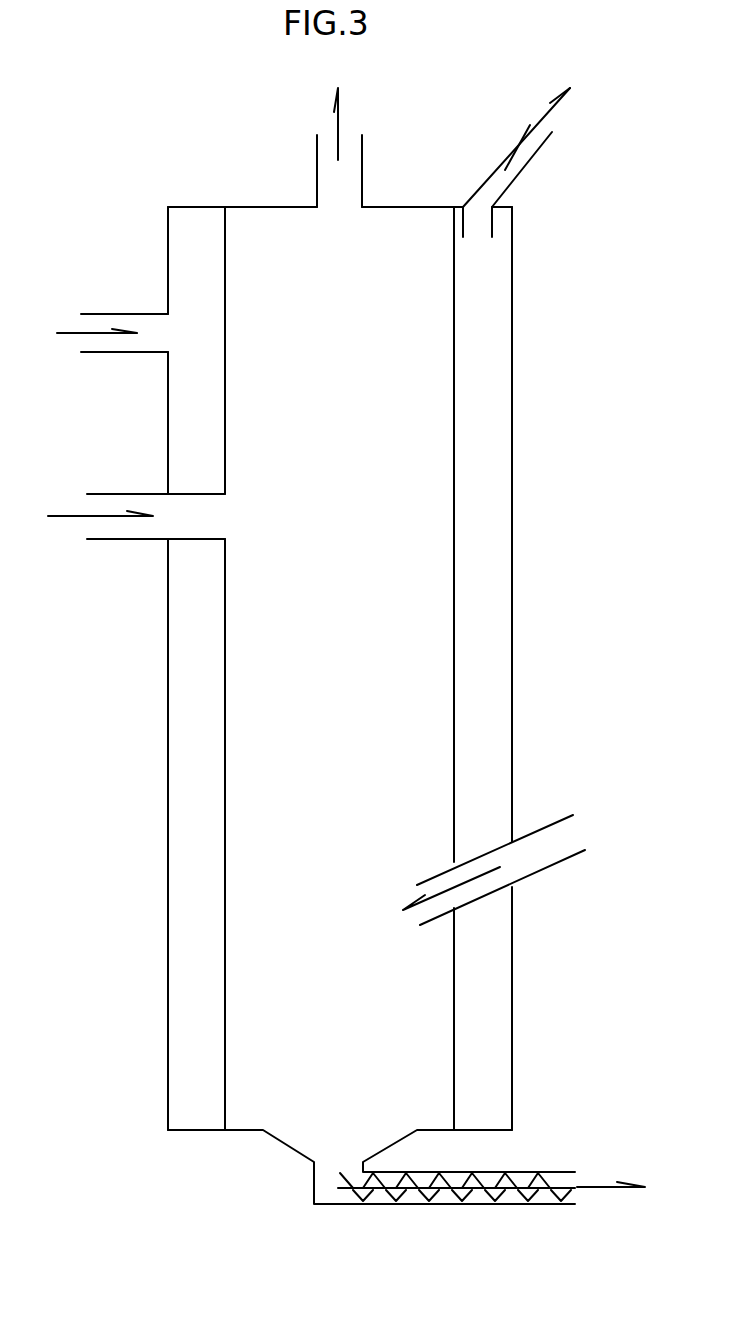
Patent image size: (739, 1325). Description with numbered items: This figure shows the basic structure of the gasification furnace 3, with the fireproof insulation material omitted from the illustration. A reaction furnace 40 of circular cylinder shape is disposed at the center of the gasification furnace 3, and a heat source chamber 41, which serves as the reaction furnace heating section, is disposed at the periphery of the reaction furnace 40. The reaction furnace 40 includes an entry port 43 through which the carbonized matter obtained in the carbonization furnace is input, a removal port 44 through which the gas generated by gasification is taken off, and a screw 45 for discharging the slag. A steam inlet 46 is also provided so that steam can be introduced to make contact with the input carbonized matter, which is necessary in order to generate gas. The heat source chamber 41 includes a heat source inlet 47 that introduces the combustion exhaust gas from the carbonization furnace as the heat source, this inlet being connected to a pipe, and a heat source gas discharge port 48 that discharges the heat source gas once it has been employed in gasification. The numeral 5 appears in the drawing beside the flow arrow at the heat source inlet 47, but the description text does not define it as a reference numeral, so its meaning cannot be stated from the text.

The gasification furnace 3 is at (205, 202).
The reaction furnace 40 is at (243, 303).
The heat source chamber 41 is at (493, 509).
The entry port 43 is at (132, 502).
The removal port 44 is at (325, 158).
The screw 45 is at (460, 1202).
The steam inlet 46 is at (540, 865).
The heat source inlet 47 is at (115, 323).
The heat source gas discharge port 48 is at (528, 163).
The gas flow 5 is at (92, 337).